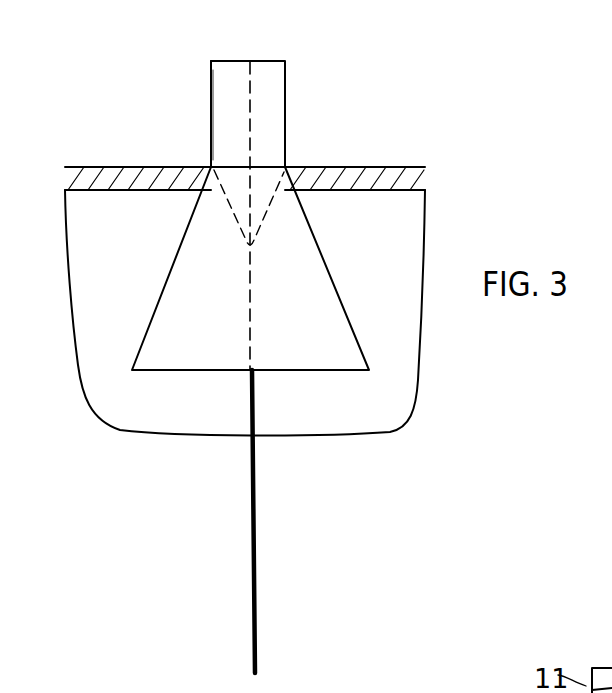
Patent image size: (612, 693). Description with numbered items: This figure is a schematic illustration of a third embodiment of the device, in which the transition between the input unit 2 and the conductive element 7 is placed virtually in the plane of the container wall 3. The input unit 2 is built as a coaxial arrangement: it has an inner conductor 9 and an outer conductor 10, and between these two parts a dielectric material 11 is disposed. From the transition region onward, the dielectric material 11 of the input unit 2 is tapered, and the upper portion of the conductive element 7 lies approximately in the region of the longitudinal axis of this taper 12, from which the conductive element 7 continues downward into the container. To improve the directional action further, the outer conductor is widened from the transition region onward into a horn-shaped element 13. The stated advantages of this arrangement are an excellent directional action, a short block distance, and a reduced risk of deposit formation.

The input unit 2 is at (274, 62).
The container wall 3 is at (386, 180).
The conductive element 7 is at (252, 570).
The inner conductor 9 is at (252, 127).
The outer conductor 10 is at (211, 133).
The dielectric material 11 is at (233, 95).
The taper 12 is at (274, 198).
The horn-shaped element 13 is at (180, 281).